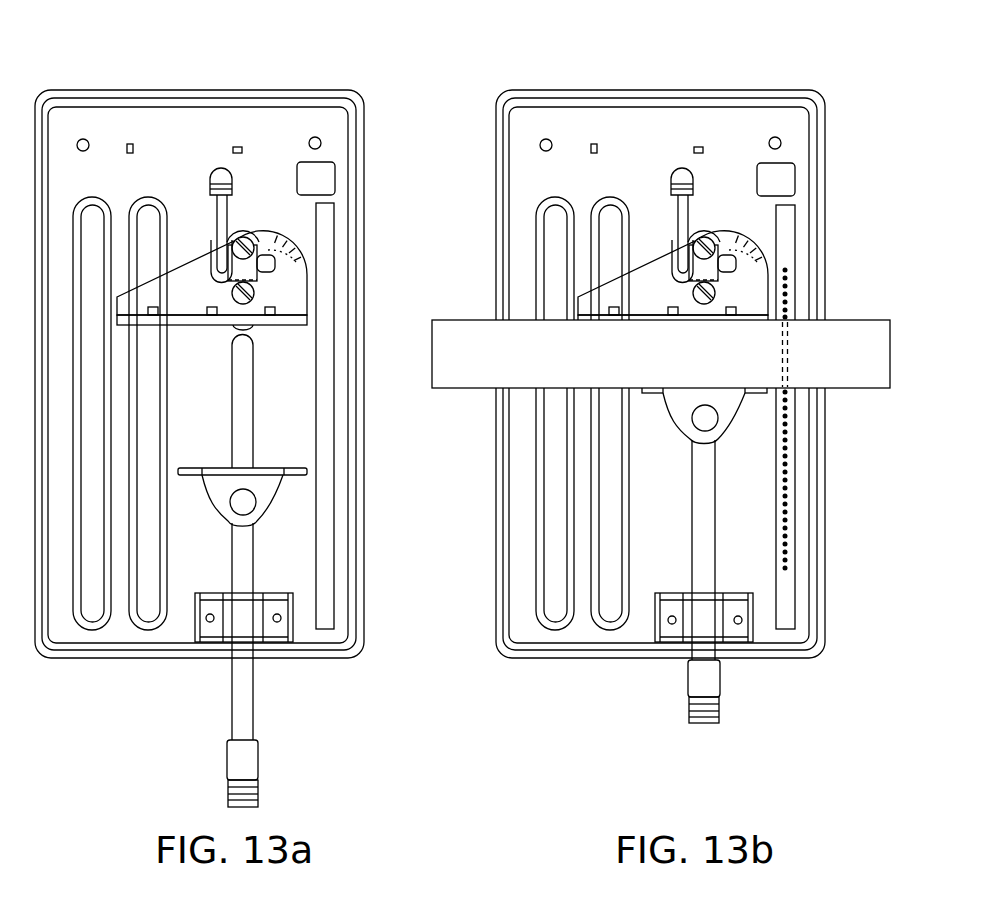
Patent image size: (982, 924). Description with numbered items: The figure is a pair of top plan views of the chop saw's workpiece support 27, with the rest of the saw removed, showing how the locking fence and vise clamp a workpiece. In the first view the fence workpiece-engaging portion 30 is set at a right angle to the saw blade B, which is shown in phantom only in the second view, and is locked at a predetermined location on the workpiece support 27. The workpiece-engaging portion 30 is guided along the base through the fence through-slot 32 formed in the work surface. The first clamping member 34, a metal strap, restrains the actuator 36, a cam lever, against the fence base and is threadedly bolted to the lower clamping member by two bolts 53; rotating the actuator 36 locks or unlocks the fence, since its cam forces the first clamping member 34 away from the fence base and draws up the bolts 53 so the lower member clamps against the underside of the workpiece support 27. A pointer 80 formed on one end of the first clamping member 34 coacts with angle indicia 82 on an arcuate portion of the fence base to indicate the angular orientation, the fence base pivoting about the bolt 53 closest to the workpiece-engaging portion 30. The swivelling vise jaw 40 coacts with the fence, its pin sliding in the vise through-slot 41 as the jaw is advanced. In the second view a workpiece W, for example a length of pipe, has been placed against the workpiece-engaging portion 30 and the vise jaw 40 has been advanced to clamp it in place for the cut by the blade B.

In FIG. 13a, the workpiece support 27 is at (292, 373).
In FIG. 13a, the workpiece-engaging portion 30 is at (291, 317).
In FIG. 13b, the workpiece-engaging portion 30 is at (750, 317).
In FIG. 13a, the fence through-slot 32 is at (243, 328).
In FIG. 13a, the first clamping member 34 is at (229, 288).
In FIG. 13b, the first clamping member 34 is at (678, 274).
In FIG. 13a, the actuator 36 is at (213, 212).
In FIG. 13b, the actuator 36 is at (654, 220).
In FIG. 13a, the vise jaw 40 is at (295, 475).
In FIG. 13b, the vise jaw 40 is at (763, 395).
In FIG. 13a, the vise through-slot 41 is at (237, 433).
In FIG. 13a, the bolts 53 is at (239, 236).
In FIG. 13b, the bolts 53 is at (709, 208).
In FIG. 13a, the pointer 80 is at (250, 232).
In FIG. 13b, the pointer 80 is at (724, 188).
In FIG. 13a, the angle indicia 82 is at (262, 234).
In FIG. 13b, the angle indicia 82 is at (746, 230).
In FIG. 13b, the workpiece W is at (850, 320).
In FIG. 13b, the blade B is at (785, 472).